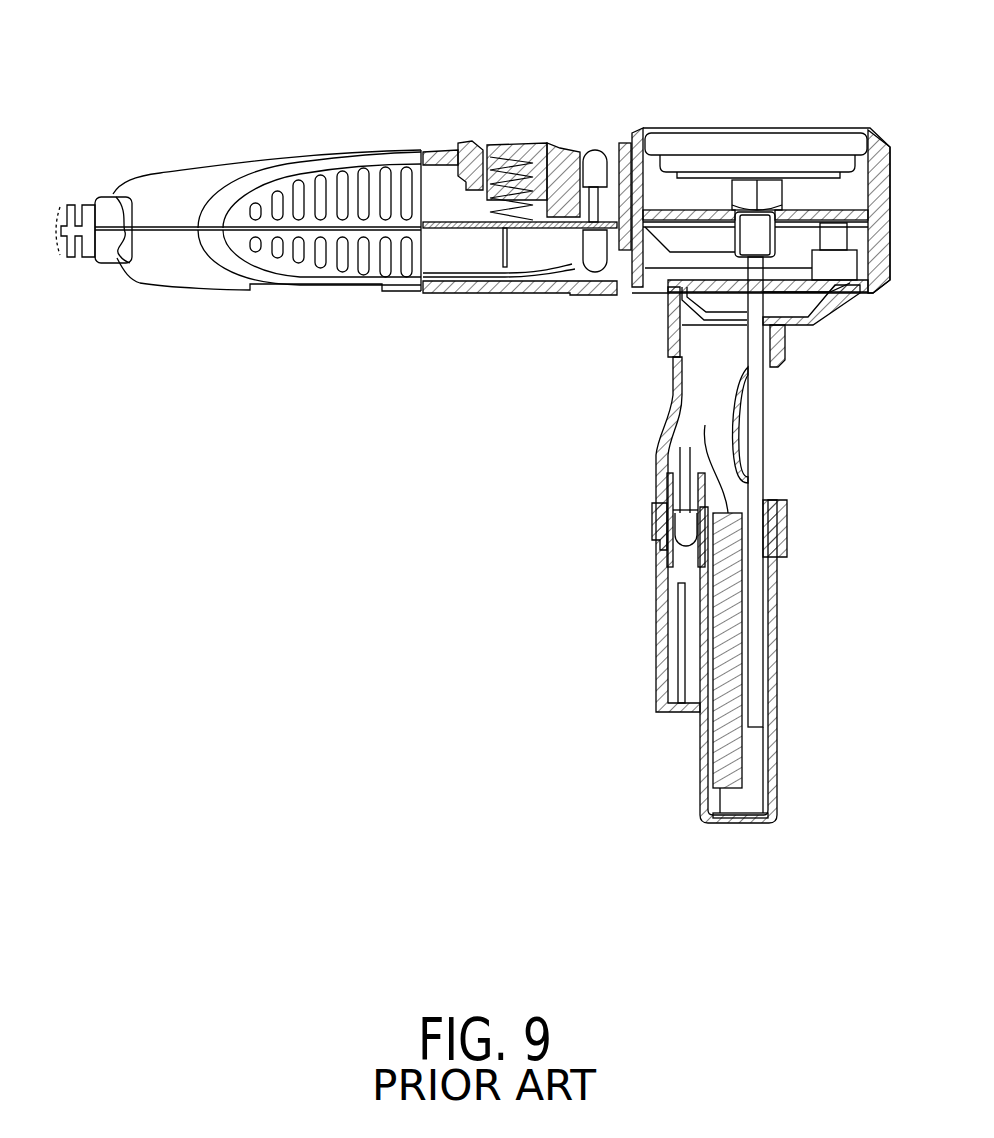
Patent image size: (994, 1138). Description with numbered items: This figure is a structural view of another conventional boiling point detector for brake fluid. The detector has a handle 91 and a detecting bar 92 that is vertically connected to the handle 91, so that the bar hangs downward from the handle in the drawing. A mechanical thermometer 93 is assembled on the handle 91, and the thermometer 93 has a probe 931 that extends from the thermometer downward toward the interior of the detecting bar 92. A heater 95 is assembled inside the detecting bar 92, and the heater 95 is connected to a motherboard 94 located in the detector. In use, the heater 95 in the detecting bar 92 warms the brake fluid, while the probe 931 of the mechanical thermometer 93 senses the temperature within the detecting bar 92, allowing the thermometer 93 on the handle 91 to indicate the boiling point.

The handle 91 is at (318, 160).
The detecting bar 92 is at (780, 735).
The mechanical thermometer 93 is at (748, 135).
The probe 931 is at (755, 628).
The motherboard 94 is at (533, 215).
The heater 95 is at (718, 740).